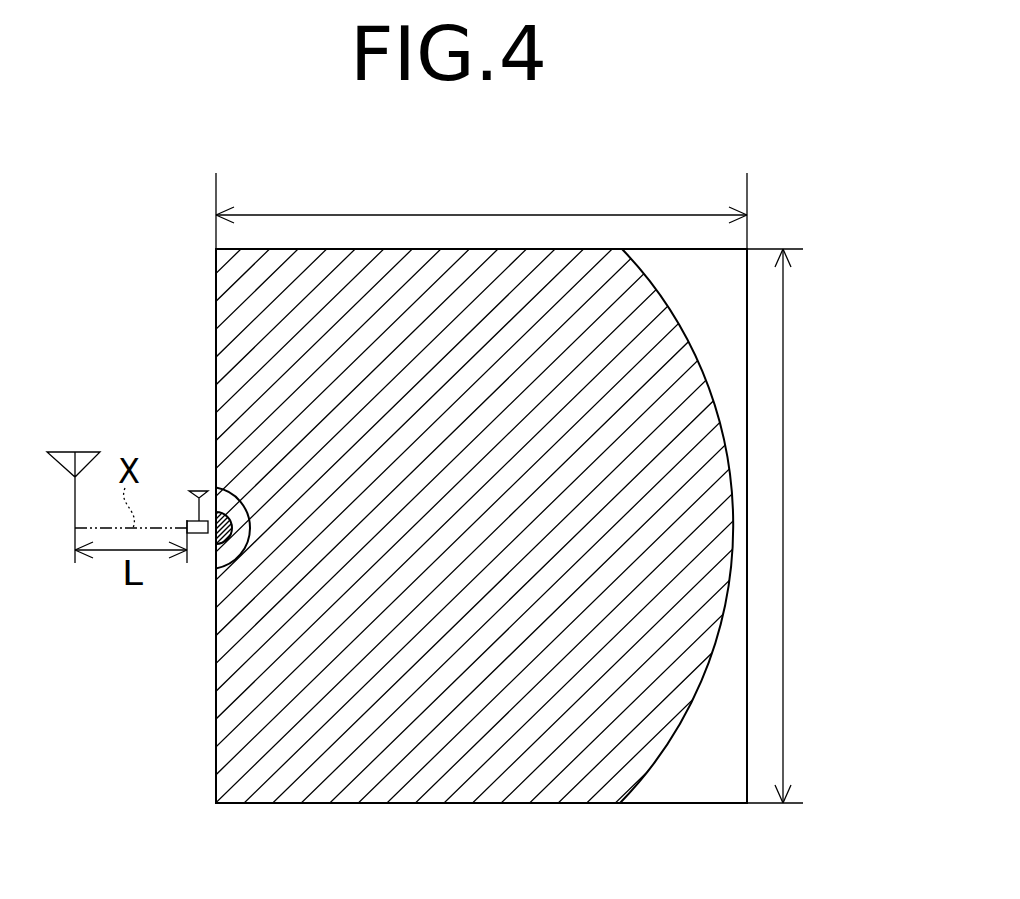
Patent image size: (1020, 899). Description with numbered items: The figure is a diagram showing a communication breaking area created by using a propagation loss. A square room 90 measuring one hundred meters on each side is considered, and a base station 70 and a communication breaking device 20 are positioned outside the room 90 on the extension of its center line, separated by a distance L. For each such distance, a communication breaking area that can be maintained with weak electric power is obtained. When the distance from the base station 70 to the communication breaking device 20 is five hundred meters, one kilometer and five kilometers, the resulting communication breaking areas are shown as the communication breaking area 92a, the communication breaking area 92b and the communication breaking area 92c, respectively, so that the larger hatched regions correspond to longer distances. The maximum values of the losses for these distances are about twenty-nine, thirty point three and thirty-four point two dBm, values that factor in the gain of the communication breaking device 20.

The room 90 is at (683, 803).
The communication breaking area 92a is at (224, 536).
The communication breaking area 92b is at (228, 566).
The communication breaking area 92c is at (333, 782).
The communication breaking device 20 is at (185, 487).
The base station 70 is at (83, 447).